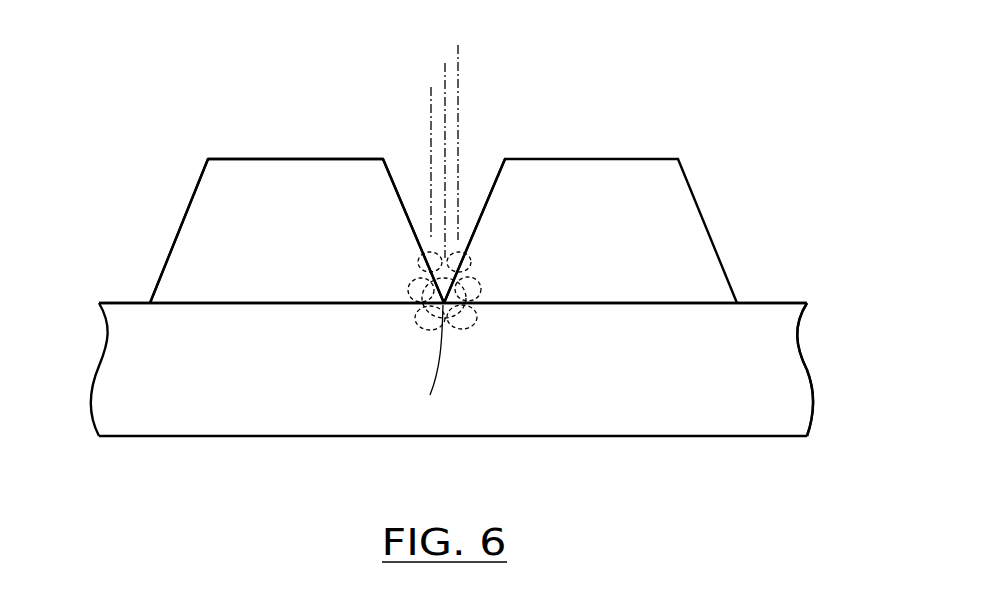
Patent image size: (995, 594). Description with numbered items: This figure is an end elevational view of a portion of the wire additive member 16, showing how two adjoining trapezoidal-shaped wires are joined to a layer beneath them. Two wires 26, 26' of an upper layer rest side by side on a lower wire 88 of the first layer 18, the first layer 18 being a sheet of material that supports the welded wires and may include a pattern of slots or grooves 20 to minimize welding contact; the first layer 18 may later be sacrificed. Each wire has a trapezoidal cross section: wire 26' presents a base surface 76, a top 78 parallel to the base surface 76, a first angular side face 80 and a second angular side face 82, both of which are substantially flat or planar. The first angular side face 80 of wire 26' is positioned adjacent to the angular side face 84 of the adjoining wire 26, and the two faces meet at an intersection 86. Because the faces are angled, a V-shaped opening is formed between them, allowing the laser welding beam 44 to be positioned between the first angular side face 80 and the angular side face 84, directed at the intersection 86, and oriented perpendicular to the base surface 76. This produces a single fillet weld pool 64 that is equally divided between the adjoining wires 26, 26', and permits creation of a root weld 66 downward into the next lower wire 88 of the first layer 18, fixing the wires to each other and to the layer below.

The wire additive member 16 is at (754, 68).
The first layer 18 is at (708, 402).
The slots or grooves 20 is at (782, 192).
The wire 26 is at (590, 194).
The wire 26' is at (297, 193).
The laser welding beam 44 is at (452, 83).
The fillet weld pool 64 is at (470, 265).
The root weld 66 is at (475, 325).
The base surface 76 is at (175, 312).
The top 78 is at (283, 149).
The first angular side face 80 is at (394, 165).
The second angular side face 82 is at (170, 236).
The angular side face 84 is at (494, 165).
The intersection 86 is at (430, 395).
The wire 88 is at (772, 382).